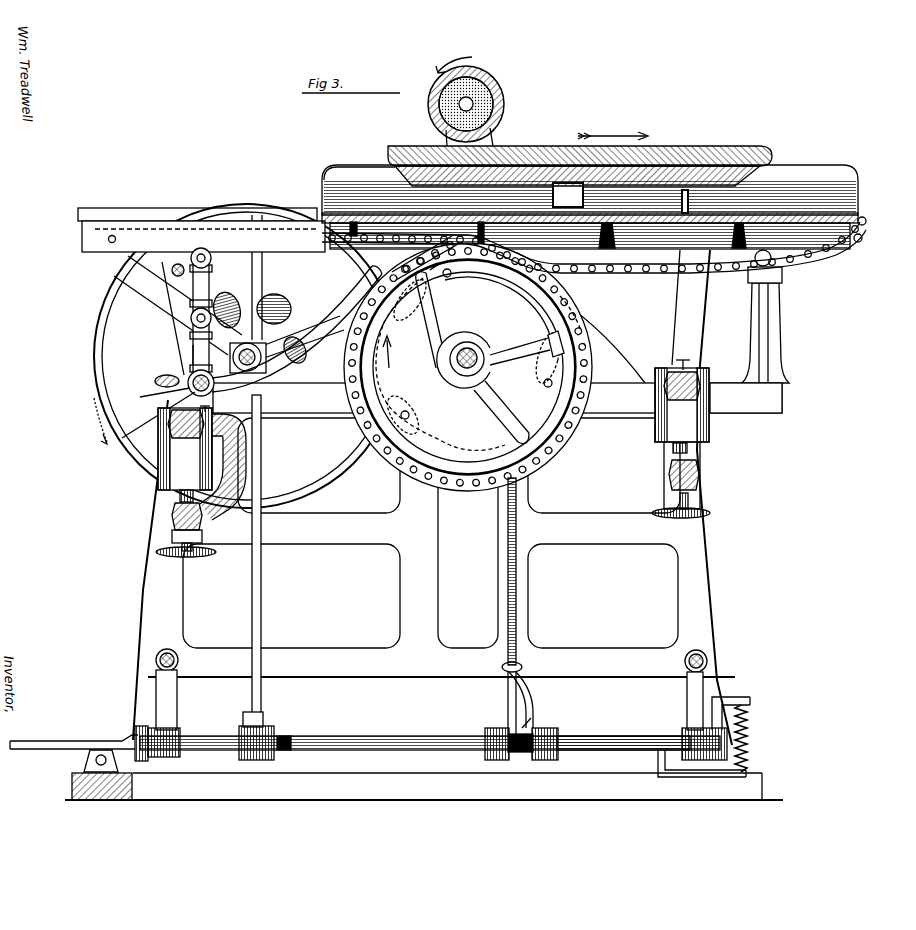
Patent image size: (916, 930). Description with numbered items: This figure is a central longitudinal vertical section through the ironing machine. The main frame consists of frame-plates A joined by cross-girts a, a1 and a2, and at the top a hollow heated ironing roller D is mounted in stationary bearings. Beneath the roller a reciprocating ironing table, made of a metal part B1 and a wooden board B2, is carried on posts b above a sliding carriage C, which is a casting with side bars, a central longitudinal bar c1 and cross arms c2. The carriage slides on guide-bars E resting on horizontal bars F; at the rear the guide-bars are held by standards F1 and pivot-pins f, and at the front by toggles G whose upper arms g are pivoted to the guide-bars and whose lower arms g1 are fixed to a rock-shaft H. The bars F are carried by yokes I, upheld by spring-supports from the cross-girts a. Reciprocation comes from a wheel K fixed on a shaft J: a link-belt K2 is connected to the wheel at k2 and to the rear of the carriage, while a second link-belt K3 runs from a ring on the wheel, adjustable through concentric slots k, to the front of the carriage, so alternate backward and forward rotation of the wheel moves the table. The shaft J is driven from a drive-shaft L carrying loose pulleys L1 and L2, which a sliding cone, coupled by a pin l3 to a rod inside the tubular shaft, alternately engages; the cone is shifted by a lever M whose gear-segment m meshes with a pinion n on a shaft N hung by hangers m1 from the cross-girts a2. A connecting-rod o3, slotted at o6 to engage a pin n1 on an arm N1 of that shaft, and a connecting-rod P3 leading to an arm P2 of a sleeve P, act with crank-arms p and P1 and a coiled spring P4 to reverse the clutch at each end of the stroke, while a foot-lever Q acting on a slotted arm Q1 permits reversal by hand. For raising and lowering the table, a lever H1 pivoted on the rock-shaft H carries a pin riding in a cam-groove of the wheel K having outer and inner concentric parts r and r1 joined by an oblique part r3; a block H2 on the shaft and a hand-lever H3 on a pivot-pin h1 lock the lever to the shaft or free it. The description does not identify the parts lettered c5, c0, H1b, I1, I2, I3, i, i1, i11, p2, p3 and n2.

The frame-plates A is at (424, 501).
The ironing or smoothing roller D is at (510, 100).
The cross-girt a is at (440, 140).
The wooden part or board B2 is at (572, 138).
The metal part of the table B1 is at (748, 184).
The posts b is at (627, 198).
The sliding carriage C is at (590, 190).
The carriage end c5 is at (359, 173).
The central longitudinal bar c1 is at (490, 215).
The cross bars or arms c2 is at (580, 240).
The roller c' c0 is at (100, 243).
The guide-bars E is at (203, 236).
The loose pulley L2 is at (237, 356).
The loose pulley L1 is at (260, 328).
The drive-shaft L is at (242, 358).
The pin l3 is at (248, 349).
The toggles G is at (173, 318).
The cross-girt a1 is at (172, 270).
The cross-pieces or yokes I is at (497, 398).
The upper toggle-arms g is at (210, 280).
The lower toggle-arms g1 is at (193, 351).
The vertical pivot-pin h1 is at (191, 382).
The hand-lever H3 is at (155, 381).
The rock-shaft H is at (156, 395).
The block or arm H2 is at (158, 415).
The arm H' H1b is at (312, 346).
The worm housing I1 is at (433, 429).
The shaft I2 is at (178, 492).
The nut I3 is at (180, 503).
The hand wheel i is at (157, 552).
The pin i1 is at (205, 401).
The pin i11 is at (682, 357).
The lever H1 is at (248, 468).
The standards F1 is at (776, 330).
The pivot-pins f is at (771, 260).
The horizontal bars F is at (746, 398).
The lever M is at (263, 534).
The link-belt K2 is at (640, 274).
The link-belt K3 is at (574, 290).
The wheel or pulley K is at (468, 367).
The concentric slots k is at (441, 258).
The connection point k2 is at (388, 368).
The cam-groove part r3 is at (431, 320).
The arm p3 is at (520, 347).
The roller block p2 is at (560, 344).
The outer concentric cam-groove part r is at (524, 314).
The inner concentric cam-groove part r1 is at (463, 360).
The shaft J is at (463, 371).
The shaft N is at (398, 724).
The sleeve P is at (610, 736).
The gear-segment m is at (260, 715).
The pinion n is at (272, 758).
The cross-girts a2 is at (178, 660).
The hangers m1 is at (177, 703).
The bearing n2 is at (437, 734).
The slotted arm Q1 is at (143, 762).
The foot-lever Q is at (66, 741).
The connecting-rod o3 is at (508, 580).
The connecting-rod P3 is at (530, 700).
The slot o6 is at (504, 703).
The rigid arm N1 is at (493, 735).
The pin n1 is at (535, 714).
The rigid arm P2 is at (550, 733).
The crank-arm P1 is at (736, 697).
The coiled spring P4 is at (750, 738).
The crank-arm p is at (706, 778).